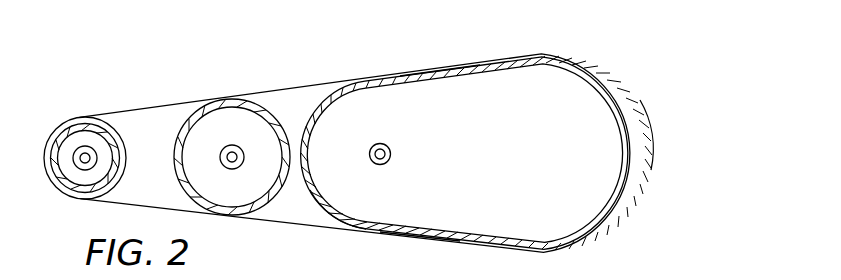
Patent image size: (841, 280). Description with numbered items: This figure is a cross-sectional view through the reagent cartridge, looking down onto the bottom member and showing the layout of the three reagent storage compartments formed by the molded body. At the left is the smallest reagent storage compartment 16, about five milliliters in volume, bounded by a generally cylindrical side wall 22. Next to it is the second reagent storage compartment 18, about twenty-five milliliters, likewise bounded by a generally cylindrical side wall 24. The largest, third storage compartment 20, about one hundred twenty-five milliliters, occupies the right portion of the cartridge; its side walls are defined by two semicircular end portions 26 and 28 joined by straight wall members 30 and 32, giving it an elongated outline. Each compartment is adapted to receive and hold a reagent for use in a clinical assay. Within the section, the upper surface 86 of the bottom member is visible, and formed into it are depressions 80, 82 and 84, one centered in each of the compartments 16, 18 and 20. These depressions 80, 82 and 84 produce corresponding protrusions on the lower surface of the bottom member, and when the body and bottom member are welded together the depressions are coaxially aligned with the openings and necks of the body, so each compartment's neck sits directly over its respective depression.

The reagent storage compartment 16 is at (100, 172).
The reagent storage compartment 18 is at (243, 192).
The third storage compartment 20 is at (556, 146).
The cylindrical side wall 22 is at (84, 123).
The cylindrical side wall 24 is at (207, 113).
The semicircular end portion 26 is at (324, 102).
The semicircular end portion 28 is at (634, 94).
The straight wall member 30 is at (433, 68).
The straight wall member 32 is at (408, 230).
The depression 80 is at (92, 157).
The depression 82 is at (240, 148).
The depression 84 is at (389, 149).
The upper surface 86 is at (351, 208).